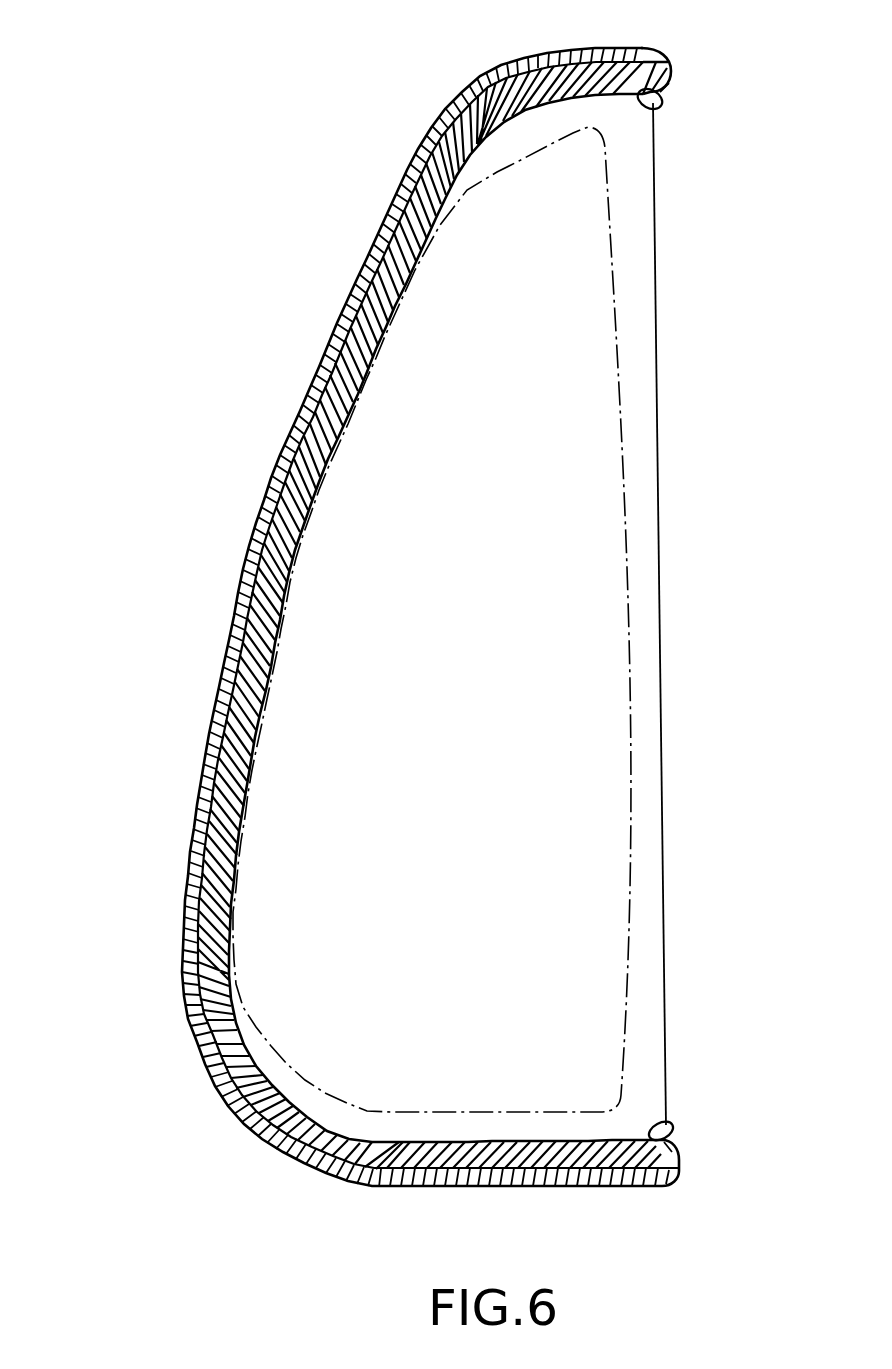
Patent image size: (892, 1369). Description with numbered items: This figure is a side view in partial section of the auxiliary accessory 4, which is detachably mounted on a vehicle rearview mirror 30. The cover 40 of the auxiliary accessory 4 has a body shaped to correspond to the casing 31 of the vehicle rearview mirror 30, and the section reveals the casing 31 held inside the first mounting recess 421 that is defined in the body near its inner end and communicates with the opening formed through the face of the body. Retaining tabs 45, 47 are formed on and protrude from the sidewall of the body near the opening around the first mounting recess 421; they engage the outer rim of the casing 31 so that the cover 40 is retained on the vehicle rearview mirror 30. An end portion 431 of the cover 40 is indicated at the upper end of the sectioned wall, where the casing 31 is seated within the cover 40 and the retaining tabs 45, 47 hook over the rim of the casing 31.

The auxiliary accessory 4 is at (172, 492).
The cover 40 is at (230, 594).
The first mounting recess 421 is at (236, 645).
The end portion of outer layer 431 is at (619, 50).
The vehicle rearview mirror 30 is at (200, 724).
The casing 31 is at (226, 770).
The retaining tab 45 is at (663, 100).
The retaining tab 47 is at (670, 1128).